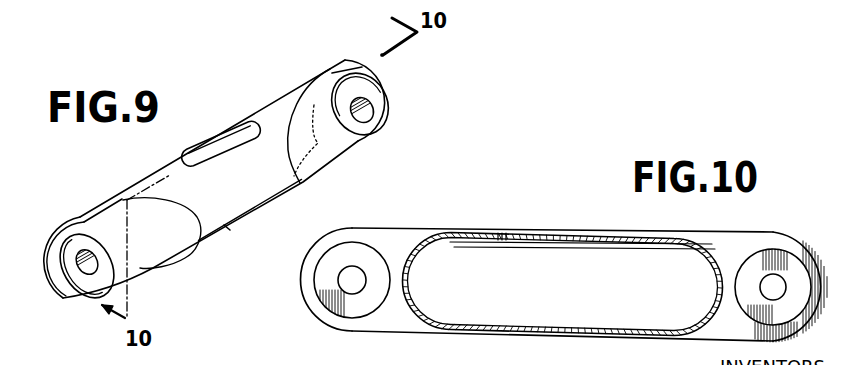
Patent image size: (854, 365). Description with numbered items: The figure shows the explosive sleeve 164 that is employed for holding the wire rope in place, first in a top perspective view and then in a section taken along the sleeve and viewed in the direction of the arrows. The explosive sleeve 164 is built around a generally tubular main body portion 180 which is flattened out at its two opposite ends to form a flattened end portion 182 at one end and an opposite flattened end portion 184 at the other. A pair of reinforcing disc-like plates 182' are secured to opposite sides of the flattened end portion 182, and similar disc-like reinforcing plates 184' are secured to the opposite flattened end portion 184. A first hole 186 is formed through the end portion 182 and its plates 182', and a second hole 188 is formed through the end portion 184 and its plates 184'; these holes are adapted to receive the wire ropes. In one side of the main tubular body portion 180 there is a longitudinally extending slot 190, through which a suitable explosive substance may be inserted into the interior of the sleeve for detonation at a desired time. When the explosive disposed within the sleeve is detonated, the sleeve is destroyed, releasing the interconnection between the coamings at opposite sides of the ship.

In FIG. 9, the explosive sleeve 164 is at (227, 228).
In FIG. 10, the explosive sleeve 164 is at (482, 334).
In FIG. 9, the main body portion 180 is at (172, 163).
In FIG. 10, the main body portion 180 is at (470, 233).
In FIG. 9, the flattened end portion 182 is at (74, 230).
In FIG. 10, the flattened end portion 182 is at (359, 257).
In FIG. 9, the reinforcing disc-like plates 182' is at (73, 279).
In FIG. 10, the reinforcing disc-like plates 182' is at (326, 290).
In FIG. 9, the flattened end portion 184 is at (355, 81).
In FIG. 10, the flattened end portion 184 is at (760, 269).
In FIG. 9, the reinforcing disc-like plates 184' is at (392, 104).
In FIG. 10, the reinforcing disc-like plates 184' is at (784, 261).
In FIG. 9, the first hole 186 is at (90, 278).
In FIG. 10, the first hole 186 is at (355, 291).
In FIG. 9, the second hole 188 is at (361, 116).
In FIG. 10, the second hole 188 is at (762, 290).
In FIG. 9, the longitudinally extending slot 190 is at (238, 136).
In FIG. 10, the longitudinally extending slot 190 is at (553, 241).